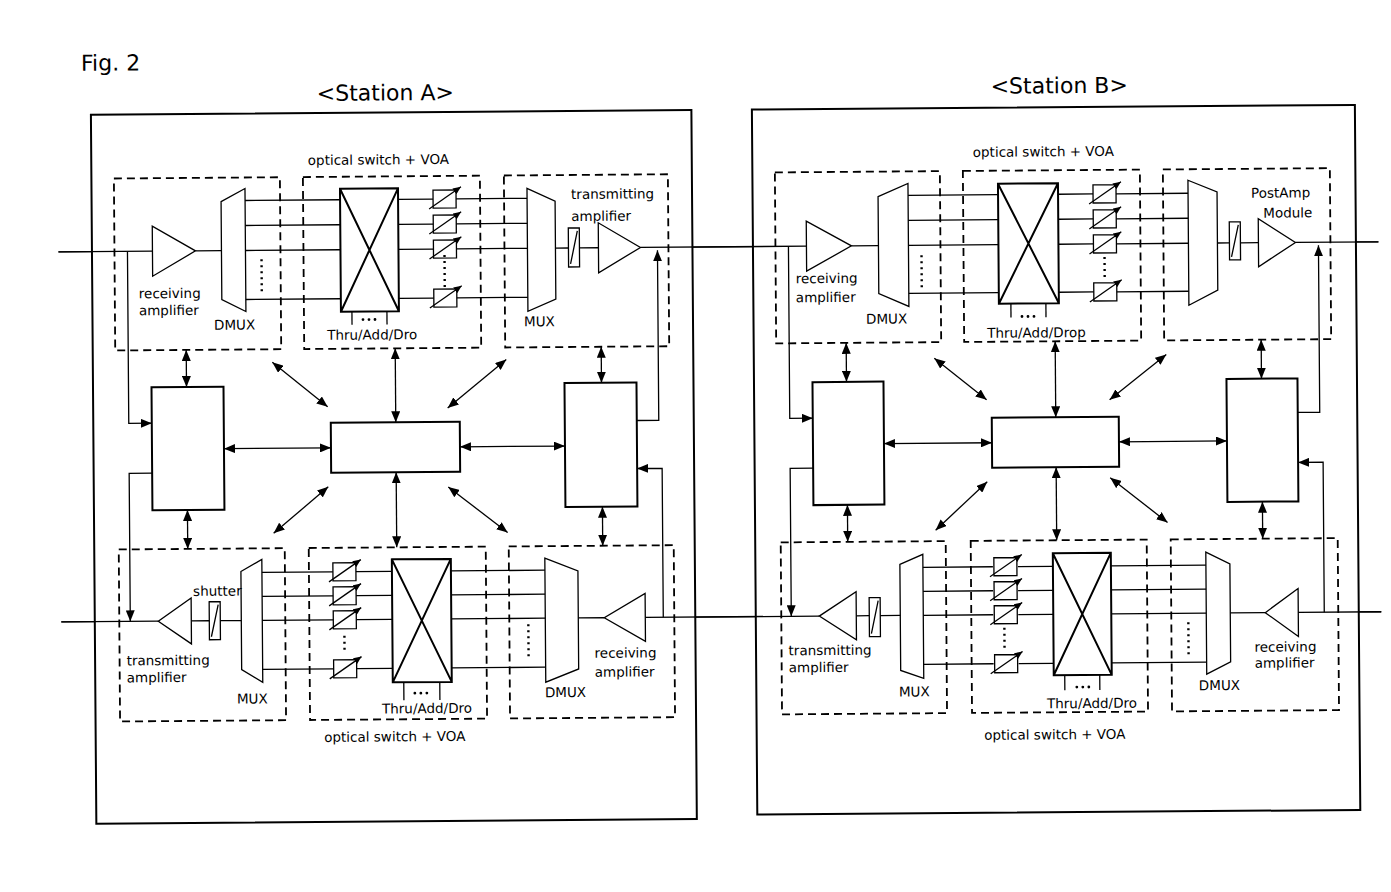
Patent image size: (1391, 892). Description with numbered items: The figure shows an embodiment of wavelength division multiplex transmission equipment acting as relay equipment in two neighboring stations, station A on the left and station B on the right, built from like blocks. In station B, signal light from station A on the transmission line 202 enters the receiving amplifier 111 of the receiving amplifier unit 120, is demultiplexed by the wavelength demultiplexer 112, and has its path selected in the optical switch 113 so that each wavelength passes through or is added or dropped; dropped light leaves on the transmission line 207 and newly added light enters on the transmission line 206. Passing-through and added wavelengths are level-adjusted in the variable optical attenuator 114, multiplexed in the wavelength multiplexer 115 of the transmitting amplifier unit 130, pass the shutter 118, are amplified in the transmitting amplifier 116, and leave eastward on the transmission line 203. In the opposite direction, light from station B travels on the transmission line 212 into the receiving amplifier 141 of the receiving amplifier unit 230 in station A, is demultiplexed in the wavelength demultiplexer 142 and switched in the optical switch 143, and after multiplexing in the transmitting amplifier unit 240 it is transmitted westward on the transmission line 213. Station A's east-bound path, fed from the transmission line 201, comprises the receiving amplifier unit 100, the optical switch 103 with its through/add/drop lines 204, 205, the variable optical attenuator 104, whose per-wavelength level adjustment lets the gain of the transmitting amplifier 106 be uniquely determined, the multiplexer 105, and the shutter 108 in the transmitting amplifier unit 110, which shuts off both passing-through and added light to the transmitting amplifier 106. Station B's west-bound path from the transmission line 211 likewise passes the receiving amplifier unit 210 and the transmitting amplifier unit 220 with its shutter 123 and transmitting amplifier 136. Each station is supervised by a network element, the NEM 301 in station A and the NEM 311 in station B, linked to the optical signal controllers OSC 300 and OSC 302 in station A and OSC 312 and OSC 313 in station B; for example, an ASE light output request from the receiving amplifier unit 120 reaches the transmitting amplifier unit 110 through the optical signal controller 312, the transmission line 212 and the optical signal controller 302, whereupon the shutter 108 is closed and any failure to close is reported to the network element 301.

The receiving amplifier unit 100 is at (198, 243).
The transmitting amplifier unit 110 is at (585, 241).
The receiving amplifier unit 120 is at (858, 233).
The transmitting amplifier unit 130 is at (1247, 231).
The receiving amplifier unit 210 is at (1255, 647).
The transmitting amplifier unit 220 is at (864, 653).
The receiving amplifier unit 230 is at (592, 655).
The transmitting amplifier unit 240 is at (201, 655).
The optical switch 103 is at (369, 249).
The variable optical attenuator 104 is at (448, 260).
The multiplexer (MUX) 105 is at (543, 249).
The transmitting amplifier 106 is at (619, 247).
The shutter 108 is at (589, 268).
The receiving amplifier 111 is at (828, 246).
The wavelength demultiplexer 112 is at (894, 244).
The optical switch 113 is at (1028, 243).
The variable optical attenuator 114 is at (1106, 252).
The wavelength multiplexer 115 is at (1203, 242).
The transmitting amplifier 116 is at (1276, 242).
The shutter 118 is at (1253, 261).
The shutter 123 is at (872, 600).
The transmitting amplifier 136 is at (838, 616).
The receiving amplifier 141 is at (625, 617).
The wavelength demultiplexer 142 is at (562, 620).
The optical switch 143 is at (422, 620).
The optical transmission line input (station A) 201 is at (75, 256).
The transmission line 202 is at (722, 250).
The transmission line 203 is at (1372, 247).
The through/add/drop port 204 is at (406, 320).
The through/add/drop port 205 is at (336, 321).
The transmission line 206 is at (1066, 315).
The transmission line 207 is at (999, 316).
The optical transmission line input (station B) 211 is at (1374, 616).
The transmission line 212 is at (725, 621).
The transmission line 213 is at (78, 626).
The optical supervisory channel unit OSC1 300 is at (188, 449).
The network element 301 is at (395, 447).
The optical signal controller 302 is at (600, 444).
The network element 311 is at (1055, 442).
The optical signal controller 312 is at (848, 444).
The optical supervisory channel unit OSC2 313 is at (1262, 440).